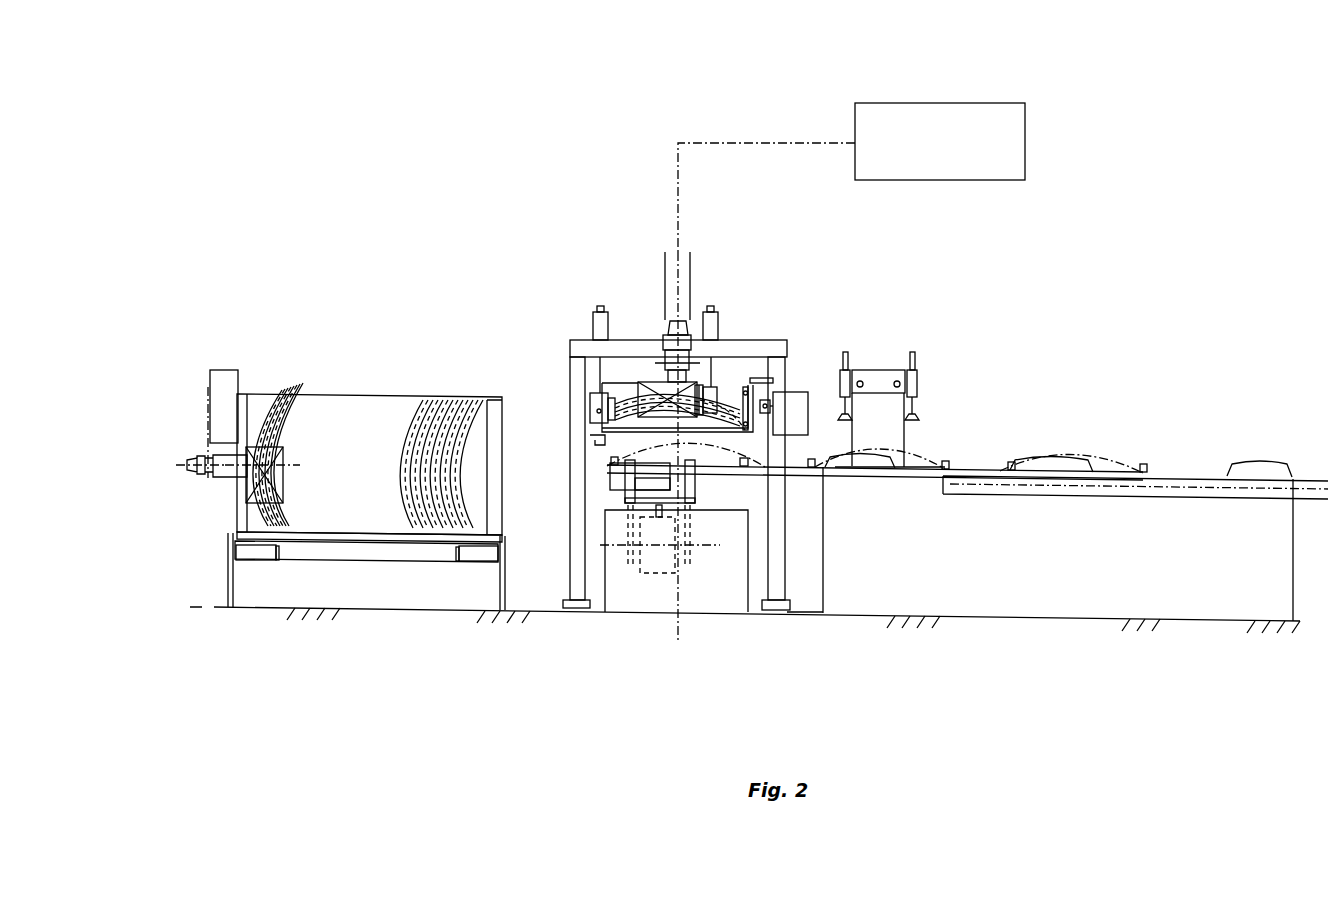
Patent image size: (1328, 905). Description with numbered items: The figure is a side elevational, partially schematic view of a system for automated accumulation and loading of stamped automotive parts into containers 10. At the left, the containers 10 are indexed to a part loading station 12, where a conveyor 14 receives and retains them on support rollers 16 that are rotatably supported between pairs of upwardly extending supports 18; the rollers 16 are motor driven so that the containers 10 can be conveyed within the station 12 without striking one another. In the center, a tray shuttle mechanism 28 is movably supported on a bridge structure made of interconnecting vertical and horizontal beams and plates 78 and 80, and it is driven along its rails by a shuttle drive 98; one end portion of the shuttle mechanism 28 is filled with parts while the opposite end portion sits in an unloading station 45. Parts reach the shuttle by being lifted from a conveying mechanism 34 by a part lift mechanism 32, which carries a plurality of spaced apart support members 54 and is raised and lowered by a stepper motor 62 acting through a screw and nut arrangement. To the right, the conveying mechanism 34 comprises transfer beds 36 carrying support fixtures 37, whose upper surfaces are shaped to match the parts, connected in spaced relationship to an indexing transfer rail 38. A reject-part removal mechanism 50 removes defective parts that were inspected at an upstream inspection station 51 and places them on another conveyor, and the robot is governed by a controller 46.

The container 10 is at (360, 485).
The part loading station 12 is at (506, 402).
The conveyor 14 is at (222, 608).
The support rollers 16 is at (258, 552).
The upwardly extending supports 18 is at (273, 562).
The tray shuttle mechanism 28 is at (766, 444).
The part lift mechanism 32 is at (707, 536).
The conveying mechanism 34 is at (924, 452).
The transfer beds 36 is at (890, 470).
The support fixtures 37 is at (607, 460).
The transfer rail 38 is at (1170, 476).
The unloading station 45 is at (679, 451).
The robot controller 46 is at (1025, 143).
The reject-part removal mechanism 50 is at (917, 376).
The inspection station 51 is at (1068, 480).
The support members 54 is at (608, 487).
The stepper motor 62 is at (672, 575).
The vertical beams and plates 78 is at (573, 585).
The horizontal beams and plates 80 is at (740, 345).
The shuttle drive 98 is at (800, 392).